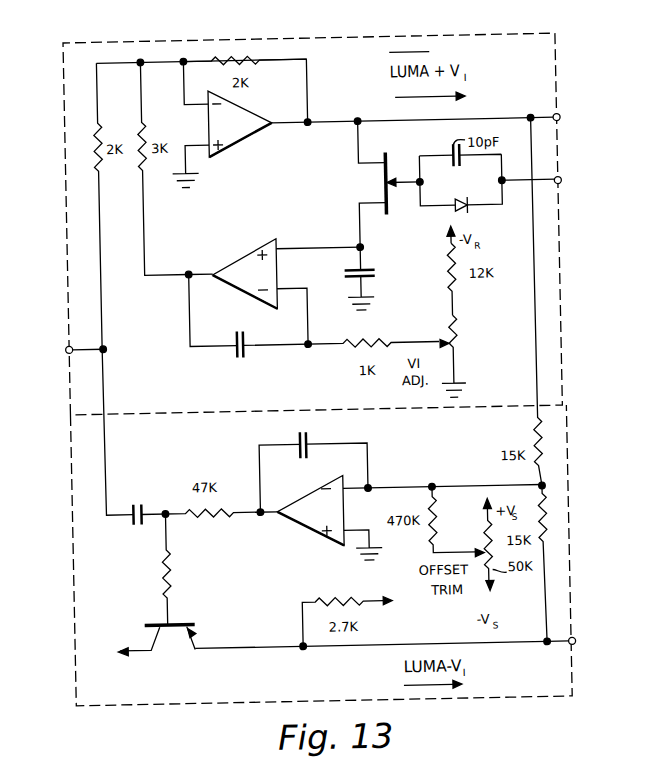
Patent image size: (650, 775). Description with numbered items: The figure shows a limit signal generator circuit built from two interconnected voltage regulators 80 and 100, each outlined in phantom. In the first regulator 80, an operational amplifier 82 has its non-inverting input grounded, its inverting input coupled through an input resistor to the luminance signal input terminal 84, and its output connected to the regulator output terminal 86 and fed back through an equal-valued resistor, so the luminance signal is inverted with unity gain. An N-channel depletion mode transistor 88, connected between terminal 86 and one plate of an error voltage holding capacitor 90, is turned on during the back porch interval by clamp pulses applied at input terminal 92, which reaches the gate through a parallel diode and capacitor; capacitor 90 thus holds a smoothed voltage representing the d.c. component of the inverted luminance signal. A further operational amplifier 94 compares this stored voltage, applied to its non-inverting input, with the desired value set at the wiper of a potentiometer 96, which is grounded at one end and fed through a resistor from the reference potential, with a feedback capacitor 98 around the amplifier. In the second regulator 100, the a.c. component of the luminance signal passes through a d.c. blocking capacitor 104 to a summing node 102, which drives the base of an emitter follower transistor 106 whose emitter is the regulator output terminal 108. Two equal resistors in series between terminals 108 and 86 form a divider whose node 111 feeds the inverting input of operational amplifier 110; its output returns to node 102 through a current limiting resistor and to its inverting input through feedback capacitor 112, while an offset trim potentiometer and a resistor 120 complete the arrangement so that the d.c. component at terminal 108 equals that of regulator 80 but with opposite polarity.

The first voltage regulator 80 is at (556, 43).
The operational amplifier 82 is at (243, 142).
The luminance signal input terminal 84 is at (67, 345).
The regulator output terminal 86 is at (559, 122).
The N-channel depletion mode transistor 88 is at (382, 219).
The error voltage holding capacitor 90 is at (368, 280).
The clamp pulse input terminal 92 is at (559, 195).
The operational amplifier 94 is at (243, 262).
The potentiometer 96 is at (453, 363).
The feedback capacitor 98 is at (230, 364).
The second voltage regulator 100 is at (63, 600).
The summing node 102 is at (158, 520).
The d.c. blocking capacitor 104 is at (126, 529).
The emitter follower transistor 106 is at (153, 640).
The regulator output terminal 108 is at (563, 644).
The operational amplifier 110 is at (304, 538).
The node 111 is at (545, 494).
The feedback capacitor 112 is at (291, 464).
The resistor 120 is at (164, 578).